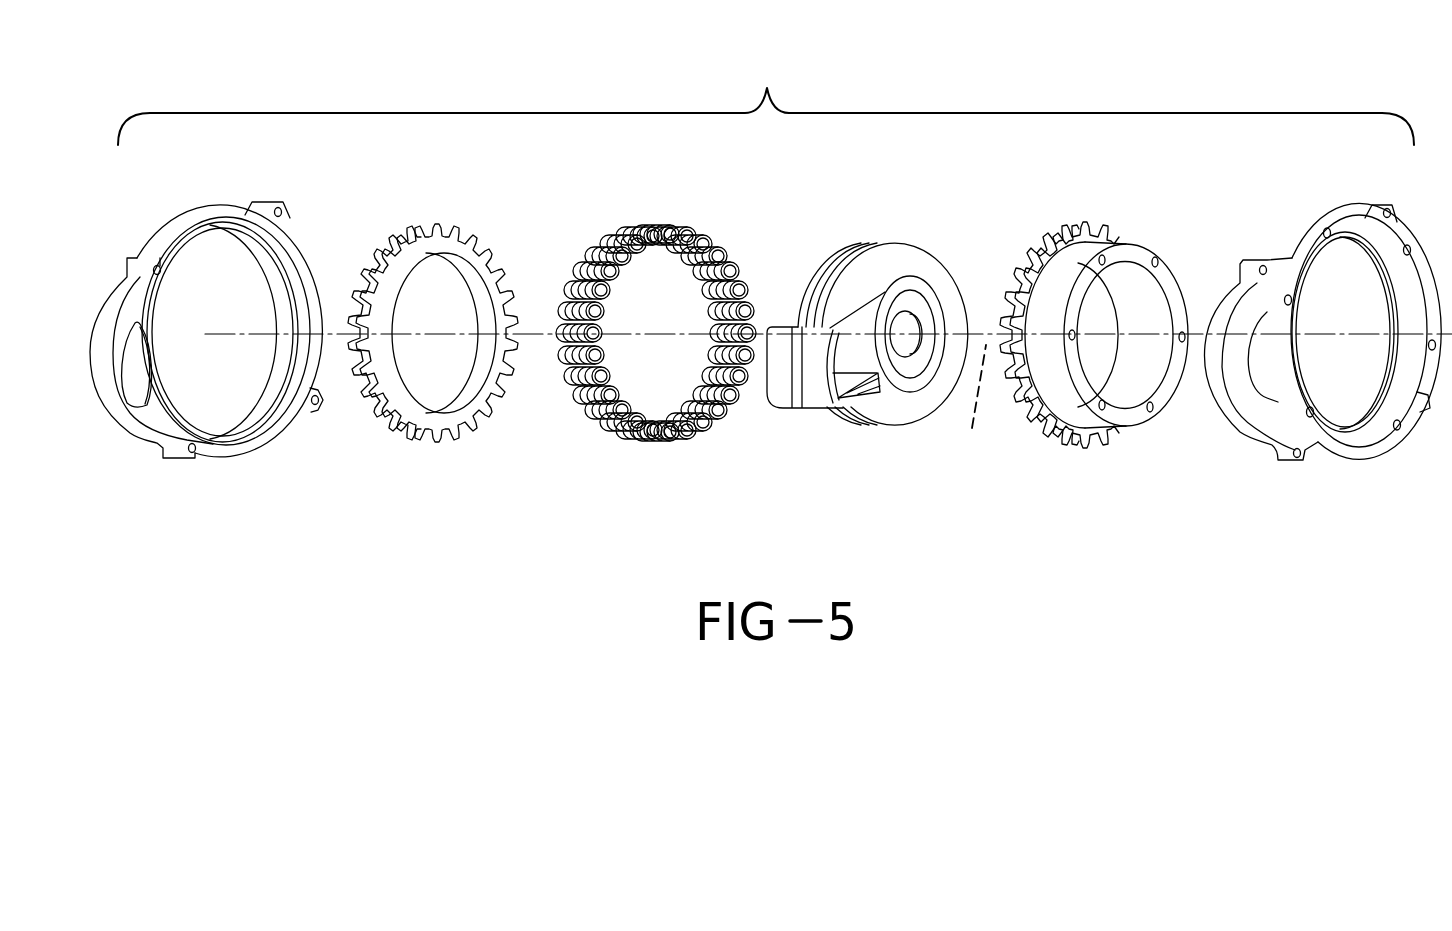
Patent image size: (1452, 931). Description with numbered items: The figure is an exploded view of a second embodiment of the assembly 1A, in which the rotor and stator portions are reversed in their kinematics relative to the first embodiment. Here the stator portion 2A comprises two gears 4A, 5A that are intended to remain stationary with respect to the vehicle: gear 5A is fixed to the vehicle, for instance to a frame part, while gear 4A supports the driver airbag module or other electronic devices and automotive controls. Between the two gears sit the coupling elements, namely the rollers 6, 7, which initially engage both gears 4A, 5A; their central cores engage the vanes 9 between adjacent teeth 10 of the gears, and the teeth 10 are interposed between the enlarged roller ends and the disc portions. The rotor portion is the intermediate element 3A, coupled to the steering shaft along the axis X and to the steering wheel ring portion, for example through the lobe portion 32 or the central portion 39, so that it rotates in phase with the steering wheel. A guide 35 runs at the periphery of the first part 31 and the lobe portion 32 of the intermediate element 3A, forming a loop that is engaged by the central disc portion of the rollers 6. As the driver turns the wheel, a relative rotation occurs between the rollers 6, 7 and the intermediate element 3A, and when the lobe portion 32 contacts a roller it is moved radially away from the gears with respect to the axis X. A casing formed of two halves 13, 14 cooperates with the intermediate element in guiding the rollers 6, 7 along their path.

The assembly 1A is at (766, 97).
The casing half 14 is at (265, 450).
The gear 5A is at (434, 366).
The vanes 9 is at (392, 247).
The teeth 10 is at (448, 228).
The stator portion 2A is at (1096, 370).
The roller 6 is at (656, 332).
The roller 7 is at (630, 236).
The intermediate element 3A is at (868, 348).
The first part 31 is at (887, 268).
The guide 35 is at (835, 290).
The lobe portion 32 is at (815, 378).
The central portion 39 is at (915, 308).
The axis X is at (972, 403).
The gear 4A is at (1142, 240).
The casing half 13 is at (1352, 440).